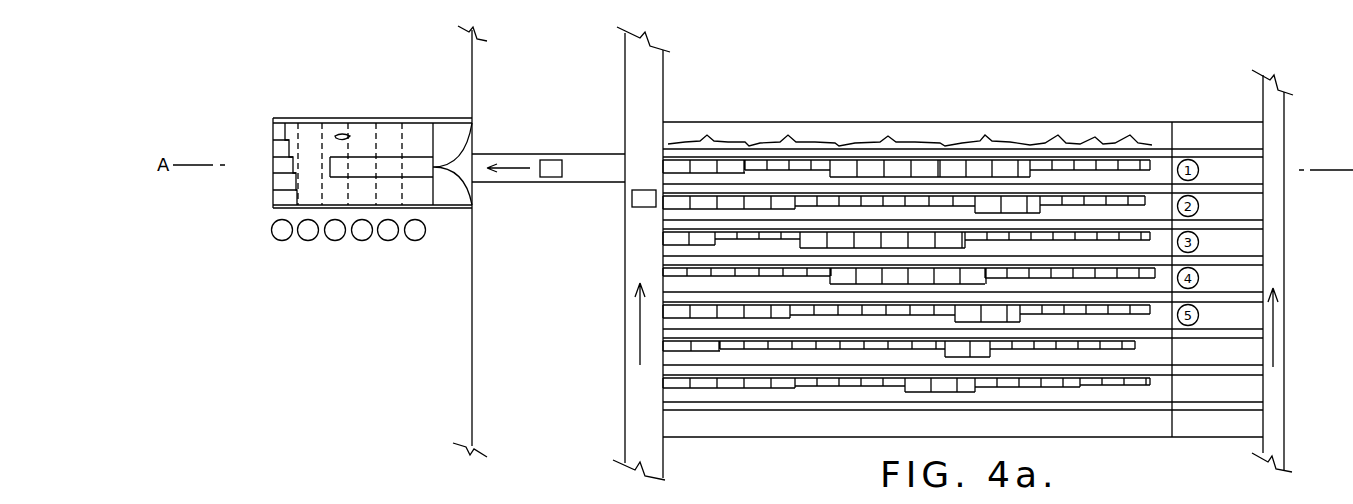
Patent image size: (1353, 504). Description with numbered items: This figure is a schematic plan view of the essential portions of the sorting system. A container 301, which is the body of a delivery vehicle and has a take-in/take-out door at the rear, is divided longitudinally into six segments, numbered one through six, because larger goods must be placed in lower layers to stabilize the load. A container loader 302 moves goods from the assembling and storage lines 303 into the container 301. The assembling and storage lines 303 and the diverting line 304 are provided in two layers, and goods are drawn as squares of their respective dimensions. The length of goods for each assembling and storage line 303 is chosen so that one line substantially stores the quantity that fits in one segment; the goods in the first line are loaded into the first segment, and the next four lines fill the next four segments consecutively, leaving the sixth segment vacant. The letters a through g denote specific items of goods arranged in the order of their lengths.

The container 301 is at (310, 117).
The container loader 302 is at (546, 150).
The assembling and storage lines 303 is at (904, 105).
The diverting line 304 is at (1287, 327).